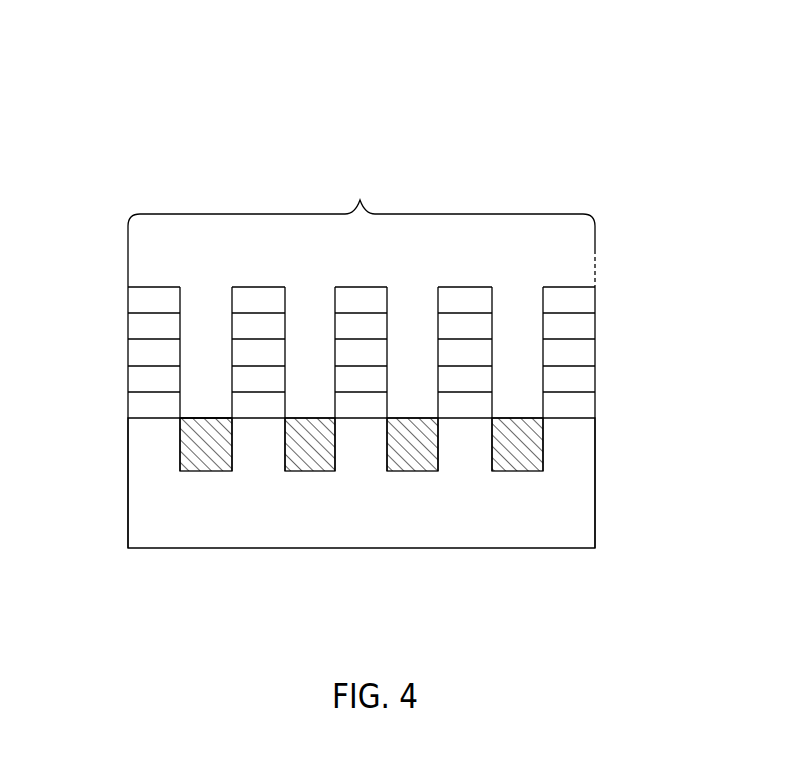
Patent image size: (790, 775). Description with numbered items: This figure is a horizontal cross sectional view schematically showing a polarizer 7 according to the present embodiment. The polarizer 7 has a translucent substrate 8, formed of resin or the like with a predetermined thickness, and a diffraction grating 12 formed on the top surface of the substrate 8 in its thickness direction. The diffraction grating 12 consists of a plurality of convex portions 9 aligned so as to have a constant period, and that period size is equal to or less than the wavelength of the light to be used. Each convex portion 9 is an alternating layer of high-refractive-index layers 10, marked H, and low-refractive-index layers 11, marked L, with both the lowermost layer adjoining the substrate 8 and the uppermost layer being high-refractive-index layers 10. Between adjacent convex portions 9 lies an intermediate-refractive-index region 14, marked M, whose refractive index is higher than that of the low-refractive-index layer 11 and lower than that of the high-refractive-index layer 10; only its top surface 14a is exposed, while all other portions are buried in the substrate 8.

The polarizer 7 is at (73, 118).
The translucent substrate 8 is at (128, 477).
The convex portions 9 is at (364, 400).
The high-refractive-index layers 10 is at (128, 300).
The low-refractive-index layers 11 is at (128, 327).
The diffraction grating 12 is at (388, 188).
The intermediate-refractive-index region 14 is at (207, 471).
The top surface 14a is at (208, 418).